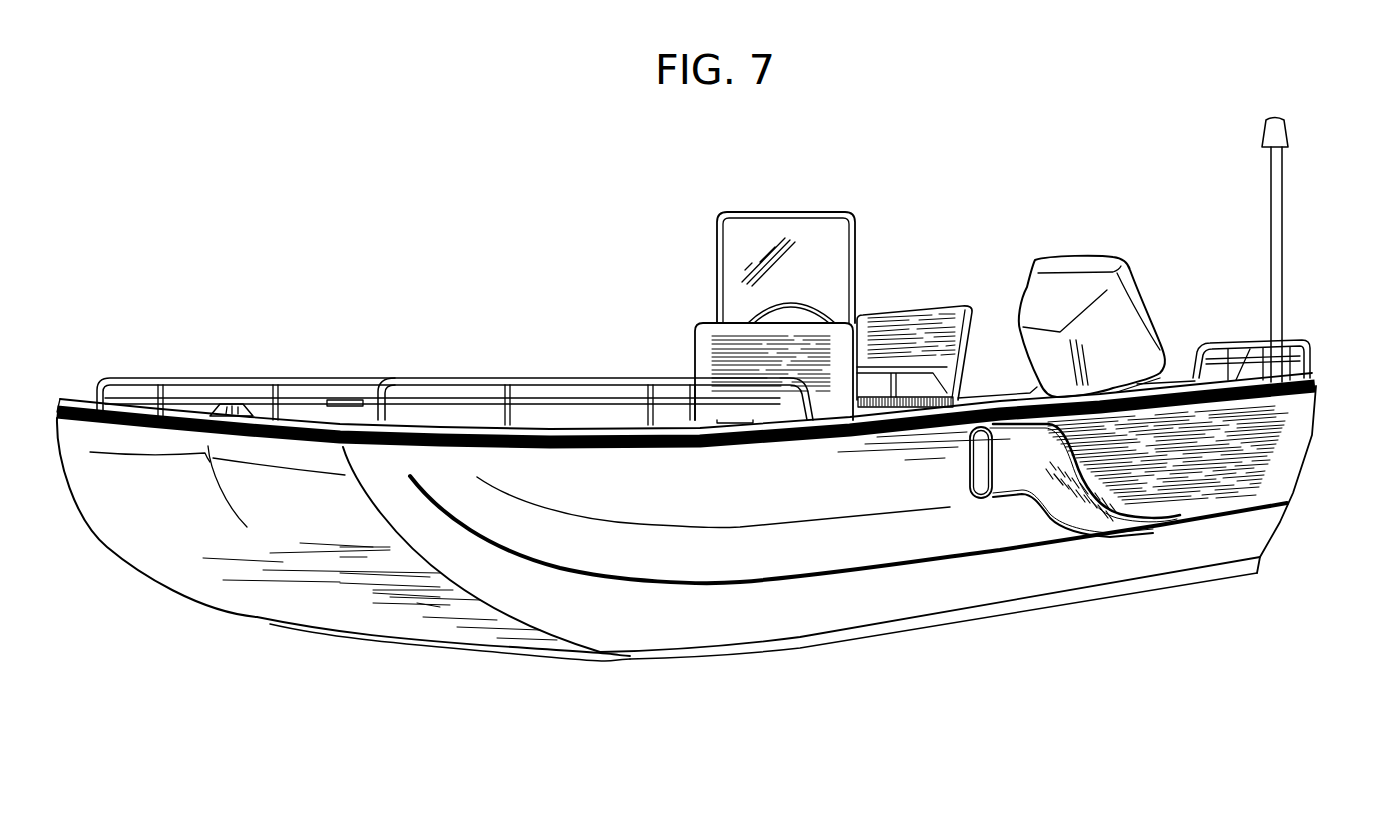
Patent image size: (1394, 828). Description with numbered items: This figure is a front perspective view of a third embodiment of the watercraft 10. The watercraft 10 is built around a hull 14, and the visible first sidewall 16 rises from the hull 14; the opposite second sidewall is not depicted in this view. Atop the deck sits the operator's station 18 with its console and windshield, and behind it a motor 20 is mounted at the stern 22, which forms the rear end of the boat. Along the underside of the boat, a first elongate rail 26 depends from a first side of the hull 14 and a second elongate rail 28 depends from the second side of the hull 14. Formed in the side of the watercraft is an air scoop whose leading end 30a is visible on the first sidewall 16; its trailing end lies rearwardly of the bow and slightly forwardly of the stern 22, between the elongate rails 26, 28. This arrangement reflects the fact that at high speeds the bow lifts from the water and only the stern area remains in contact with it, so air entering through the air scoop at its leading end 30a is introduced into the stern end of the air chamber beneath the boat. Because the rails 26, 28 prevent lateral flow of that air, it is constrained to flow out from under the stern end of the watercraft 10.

The watercraft 10 is at (428, 193).
The hull 14 is at (322, 600).
The first sidewall 16 is at (797, 507).
The operator's station 18 is at (690, 210).
The motor 20 is at (1062, 252).
The stern 22 is at (1277, 465).
The first elongate rail 26 is at (955, 620).
The second elongate rail 28 is at (527, 655).
The leading end of air scoop 30a is at (1043, 475).